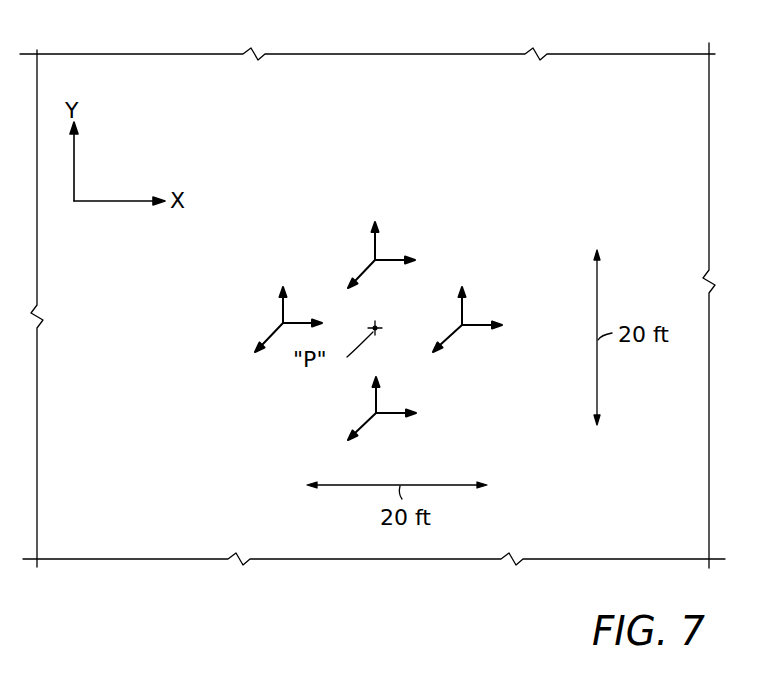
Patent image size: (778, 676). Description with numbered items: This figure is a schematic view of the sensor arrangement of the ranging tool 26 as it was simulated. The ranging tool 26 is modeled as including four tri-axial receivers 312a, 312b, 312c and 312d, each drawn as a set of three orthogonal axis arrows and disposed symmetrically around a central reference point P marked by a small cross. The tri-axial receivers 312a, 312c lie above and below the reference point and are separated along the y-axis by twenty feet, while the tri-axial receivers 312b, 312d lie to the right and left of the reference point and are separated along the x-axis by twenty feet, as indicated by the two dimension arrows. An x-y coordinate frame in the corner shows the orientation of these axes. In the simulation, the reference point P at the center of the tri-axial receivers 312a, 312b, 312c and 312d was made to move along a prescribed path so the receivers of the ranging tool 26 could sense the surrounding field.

The ranging tool 26 is at (474, 245).
The tri-axial receiver 312a is at (373, 247).
The tri-axial receiver 312b is at (473, 327).
The tri-axial receiver 312c is at (373, 395).
The tri-axial receiver 312d is at (280, 308).